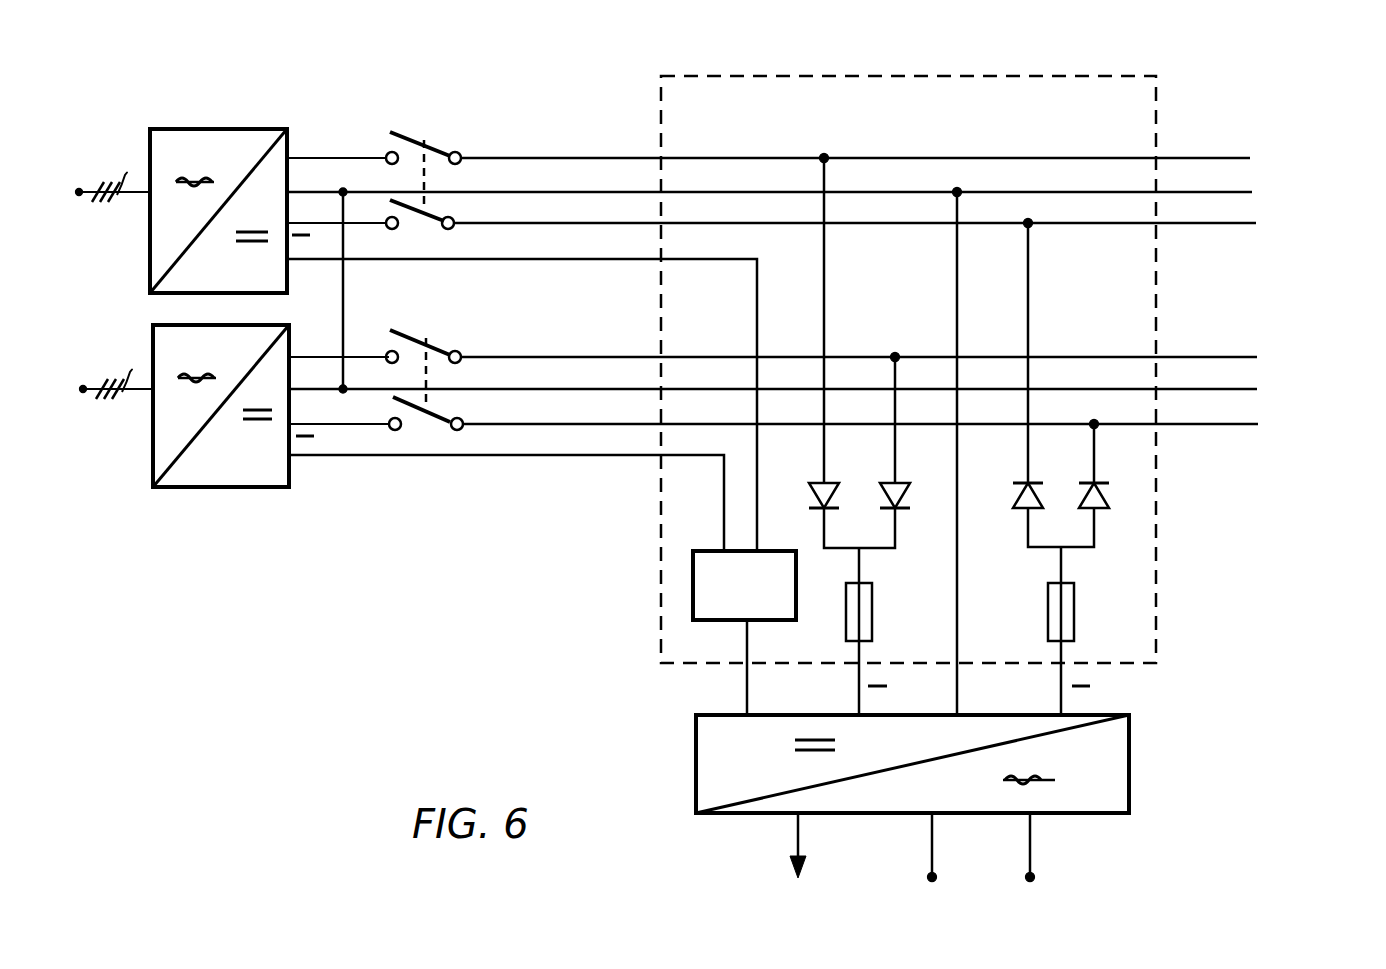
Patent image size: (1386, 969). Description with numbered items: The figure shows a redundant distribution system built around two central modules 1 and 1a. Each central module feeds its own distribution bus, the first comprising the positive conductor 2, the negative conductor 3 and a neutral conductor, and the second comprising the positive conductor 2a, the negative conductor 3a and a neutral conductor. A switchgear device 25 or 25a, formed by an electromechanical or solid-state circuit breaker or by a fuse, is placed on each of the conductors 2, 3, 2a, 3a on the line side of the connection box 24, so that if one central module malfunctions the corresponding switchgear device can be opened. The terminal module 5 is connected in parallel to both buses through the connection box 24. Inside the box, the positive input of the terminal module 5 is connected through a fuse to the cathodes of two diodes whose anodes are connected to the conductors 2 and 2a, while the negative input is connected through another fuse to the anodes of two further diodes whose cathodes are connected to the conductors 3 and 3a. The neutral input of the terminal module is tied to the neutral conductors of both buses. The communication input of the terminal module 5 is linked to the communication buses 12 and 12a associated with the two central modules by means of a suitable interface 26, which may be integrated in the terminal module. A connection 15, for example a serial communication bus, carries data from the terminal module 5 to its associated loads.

The central module 1 is at (205, 125).
The central module 1a is at (187, 490).
The conductor 2 is at (1178, 158).
The conductor 2a is at (1207, 357).
The conductor 3 is at (1226, 224).
The conductor 3a is at (1230, 425).
The terminal module 5 is at (1130, 757).
The communication bus 12 is at (496, 262).
The communication bus 12a is at (420, 458).
The connection 15 is at (794, 842).
The connection box 24 is at (1086, 75).
The switchgear device 25 is at (422, 136).
The switchgear device 25a is at (408, 326).
The interface 26 is at (758, 622).